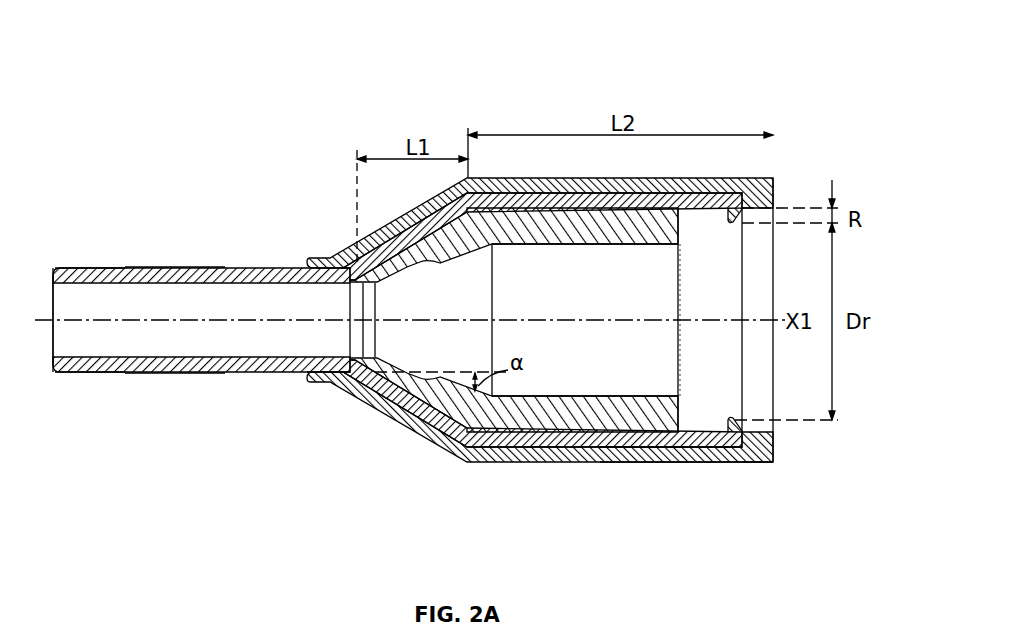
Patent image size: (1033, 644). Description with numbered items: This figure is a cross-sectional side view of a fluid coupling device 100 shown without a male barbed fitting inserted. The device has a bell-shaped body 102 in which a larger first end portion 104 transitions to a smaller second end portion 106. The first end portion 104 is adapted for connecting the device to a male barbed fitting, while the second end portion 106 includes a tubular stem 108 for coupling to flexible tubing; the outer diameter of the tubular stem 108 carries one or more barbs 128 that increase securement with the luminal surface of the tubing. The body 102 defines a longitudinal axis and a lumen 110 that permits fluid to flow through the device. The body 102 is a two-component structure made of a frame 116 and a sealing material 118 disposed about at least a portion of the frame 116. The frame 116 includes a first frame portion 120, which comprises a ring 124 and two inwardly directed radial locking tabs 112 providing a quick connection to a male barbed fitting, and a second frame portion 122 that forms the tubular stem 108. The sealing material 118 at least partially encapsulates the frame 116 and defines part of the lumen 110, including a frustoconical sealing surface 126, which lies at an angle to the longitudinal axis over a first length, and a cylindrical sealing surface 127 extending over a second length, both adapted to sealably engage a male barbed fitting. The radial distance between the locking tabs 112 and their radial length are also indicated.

The fluid coupling device 100 is at (128, 46).
The body 102 is at (677, 172).
The first end portion 104 is at (773, 176).
The second end portion 106 is at (53, 266).
The tubular stem 108 is at (82, 374).
The lumen 110 is at (720, 334).
The locking tabs 112 is at (724, 425).
The frame 116 is at (292, 375).
The sealing material 118 is at (648, 440).
The first frame portion 120 is at (514, 320).
The second frame portion 122 is at (185, 373).
The ring 124 is at (755, 458).
The frustoconical sealing surface 126 is at (400, 263).
The cylindrical sealing surface 127 is at (492, 465).
The barbs 128 is at (125, 268).